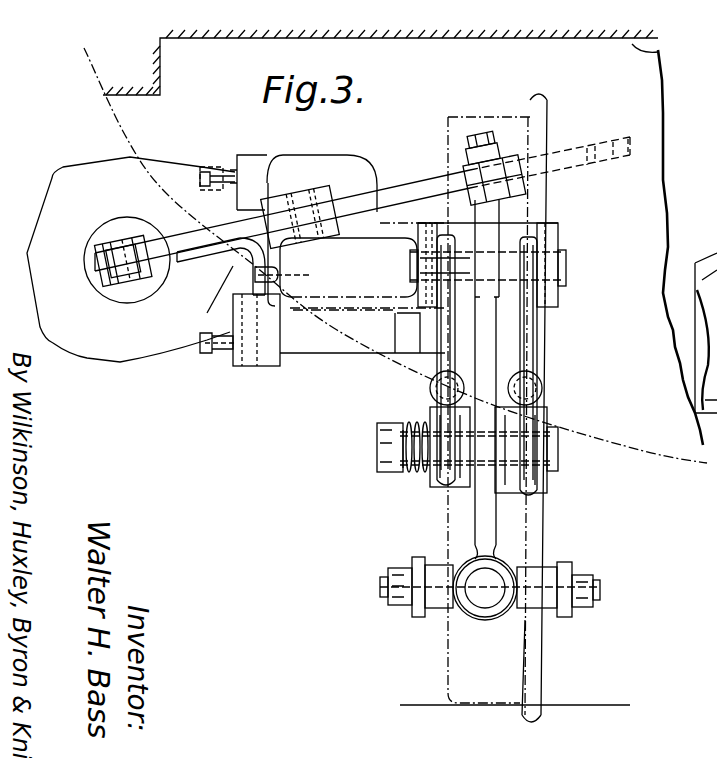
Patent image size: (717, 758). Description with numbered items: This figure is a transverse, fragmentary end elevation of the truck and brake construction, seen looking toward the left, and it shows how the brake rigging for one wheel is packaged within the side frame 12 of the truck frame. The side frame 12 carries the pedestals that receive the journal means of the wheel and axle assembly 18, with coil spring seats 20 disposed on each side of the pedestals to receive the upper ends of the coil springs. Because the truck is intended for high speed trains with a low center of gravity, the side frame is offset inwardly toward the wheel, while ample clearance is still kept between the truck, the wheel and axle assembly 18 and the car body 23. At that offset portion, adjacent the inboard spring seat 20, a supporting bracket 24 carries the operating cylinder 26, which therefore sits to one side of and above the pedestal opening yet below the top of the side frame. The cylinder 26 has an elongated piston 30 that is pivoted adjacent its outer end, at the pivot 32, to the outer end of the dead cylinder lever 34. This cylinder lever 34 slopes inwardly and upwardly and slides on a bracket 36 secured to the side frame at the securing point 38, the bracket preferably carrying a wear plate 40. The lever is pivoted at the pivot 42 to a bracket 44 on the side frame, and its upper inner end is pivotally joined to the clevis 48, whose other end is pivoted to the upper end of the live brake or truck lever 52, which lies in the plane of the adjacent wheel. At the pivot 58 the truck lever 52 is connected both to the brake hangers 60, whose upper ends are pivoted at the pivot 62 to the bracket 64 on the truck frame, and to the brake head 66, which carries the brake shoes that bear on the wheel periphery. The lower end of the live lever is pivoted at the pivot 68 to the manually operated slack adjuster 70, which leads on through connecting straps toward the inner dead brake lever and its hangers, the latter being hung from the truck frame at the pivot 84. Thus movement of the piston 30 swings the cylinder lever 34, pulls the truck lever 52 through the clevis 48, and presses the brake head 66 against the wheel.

The side frame 12 is at (562, 565).
The wheel and axle assembly 18 is at (505, 668).
The coil spring seat 20 is at (351, 350).
The car body 23 is at (658, 52).
The supporting bracket 24 is at (243, 358).
The operating cylinder 26 is at (70, 177).
The elongated piston 30 is at (100, 275).
The pivot 32 is at (123, 283).
The dead cylinder lever 34 is at (398, 188).
The bracket 36 is at (187, 264).
The securing point 38 is at (352, 245).
The wear plate 40 is at (173, 260).
The pivot 42 is at (297, 195).
The bracket 44 is at (330, 184).
The clevis 48 is at (526, 119).
The live brake or truck lever 52 is at (490, 510).
The pivot 58 is at (558, 440).
The brake hangers 60 is at (472, 260).
The pivot 62 is at (566, 282).
The bracket 64 is at (558, 242).
The brake head 66 is at (465, 514).
The pivot 68 is at (586, 578).
The slack adjuster 70 is at (495, 593).
The pivot 84 is at (571, 149).